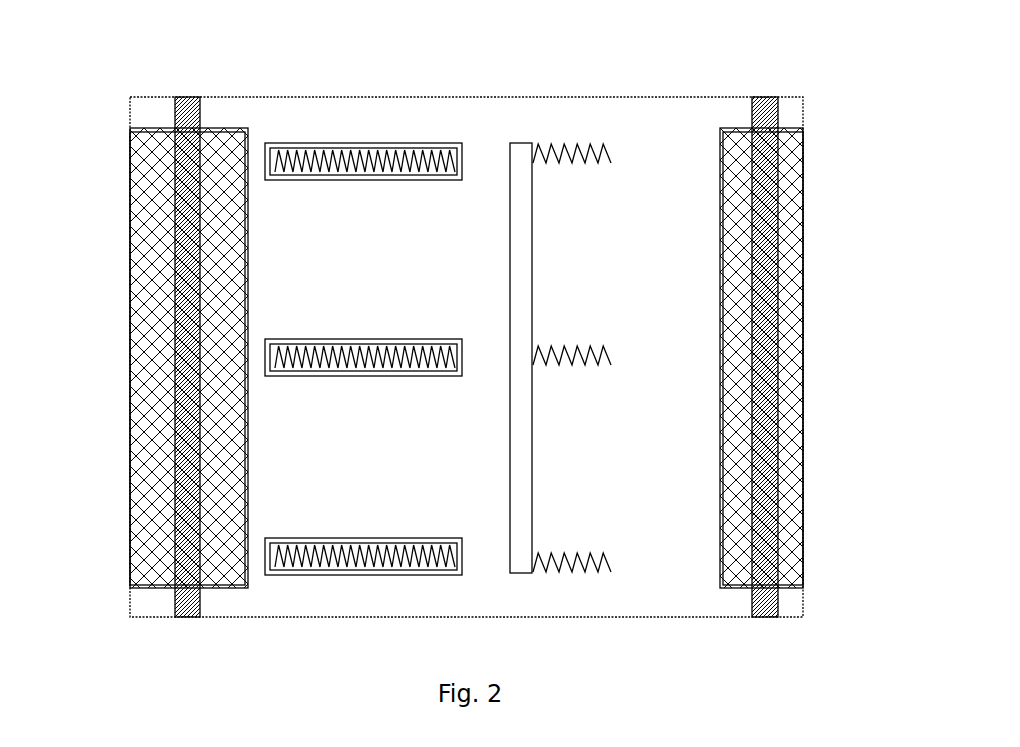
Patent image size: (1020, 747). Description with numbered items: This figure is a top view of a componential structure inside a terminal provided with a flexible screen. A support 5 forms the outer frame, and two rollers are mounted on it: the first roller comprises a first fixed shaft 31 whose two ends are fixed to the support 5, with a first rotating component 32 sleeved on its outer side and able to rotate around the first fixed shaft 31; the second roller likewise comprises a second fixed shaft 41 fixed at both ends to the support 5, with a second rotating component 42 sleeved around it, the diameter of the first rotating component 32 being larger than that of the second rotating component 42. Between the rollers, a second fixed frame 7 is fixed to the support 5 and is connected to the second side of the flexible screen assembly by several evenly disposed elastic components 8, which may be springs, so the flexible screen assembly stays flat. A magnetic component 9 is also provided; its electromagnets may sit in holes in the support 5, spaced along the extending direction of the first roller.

The support 5 is at (653, 142).
The second fixed frame 7 is at (512, 148).
The elastic components 8 is at (587, 147).
The magnetic component 9 is at (352, 150).
The first fixed shaft 31 is at (180, 118).
The first rotating component 32 is at (152, 237).
The second fixed shaft 41 is at (770, 118).
The second rotating component 42 is at (790, 240).